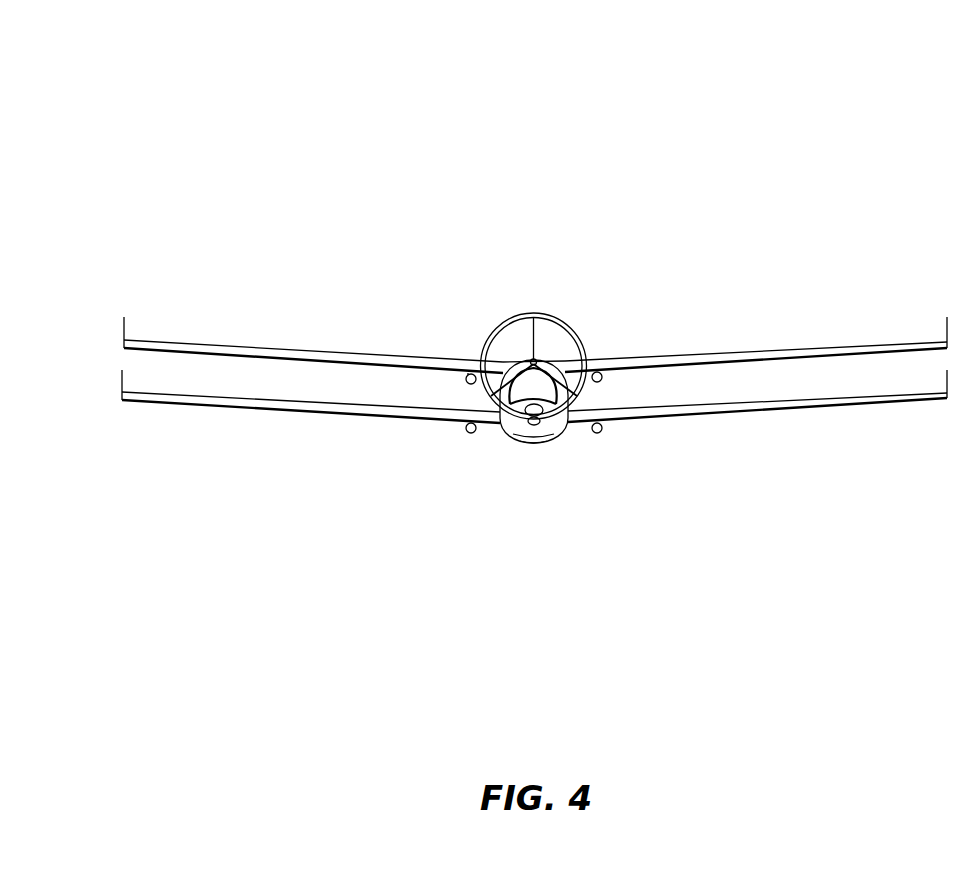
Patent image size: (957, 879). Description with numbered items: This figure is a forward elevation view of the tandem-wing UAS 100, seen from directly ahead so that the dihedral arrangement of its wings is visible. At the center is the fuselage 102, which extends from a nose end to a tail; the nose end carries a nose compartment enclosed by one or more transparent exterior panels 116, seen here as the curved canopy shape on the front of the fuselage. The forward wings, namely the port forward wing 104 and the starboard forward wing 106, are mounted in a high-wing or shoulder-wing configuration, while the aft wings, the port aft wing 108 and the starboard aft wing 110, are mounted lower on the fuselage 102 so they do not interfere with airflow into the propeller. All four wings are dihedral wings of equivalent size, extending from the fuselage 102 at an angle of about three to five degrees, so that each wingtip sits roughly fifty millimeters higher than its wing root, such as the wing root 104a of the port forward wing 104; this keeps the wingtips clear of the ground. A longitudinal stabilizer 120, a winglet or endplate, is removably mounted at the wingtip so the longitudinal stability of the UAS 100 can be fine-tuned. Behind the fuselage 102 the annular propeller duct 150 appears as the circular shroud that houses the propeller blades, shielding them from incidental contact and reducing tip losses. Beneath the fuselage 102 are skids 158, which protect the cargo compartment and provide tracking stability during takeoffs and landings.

The tandem-wing UAS 100 is at (70, 95).
The fuselage 102 is at (543, 425).
The port forward wing 104 is at (870, 348).
The wing root 104a is at (550, 362).
The starboard forward wing 106 is at (357, 353).
The port aft wing 108 is at (838, 405).
The starboard aft wing 110 is at (371, 408).
The transparent exterior panel 116 is at (523, 378).
The longitudinal stabilizer 120 is at (127, 332).
The propeller duct 150 is at (512, 320).
The skids 158 is at (526, 442).